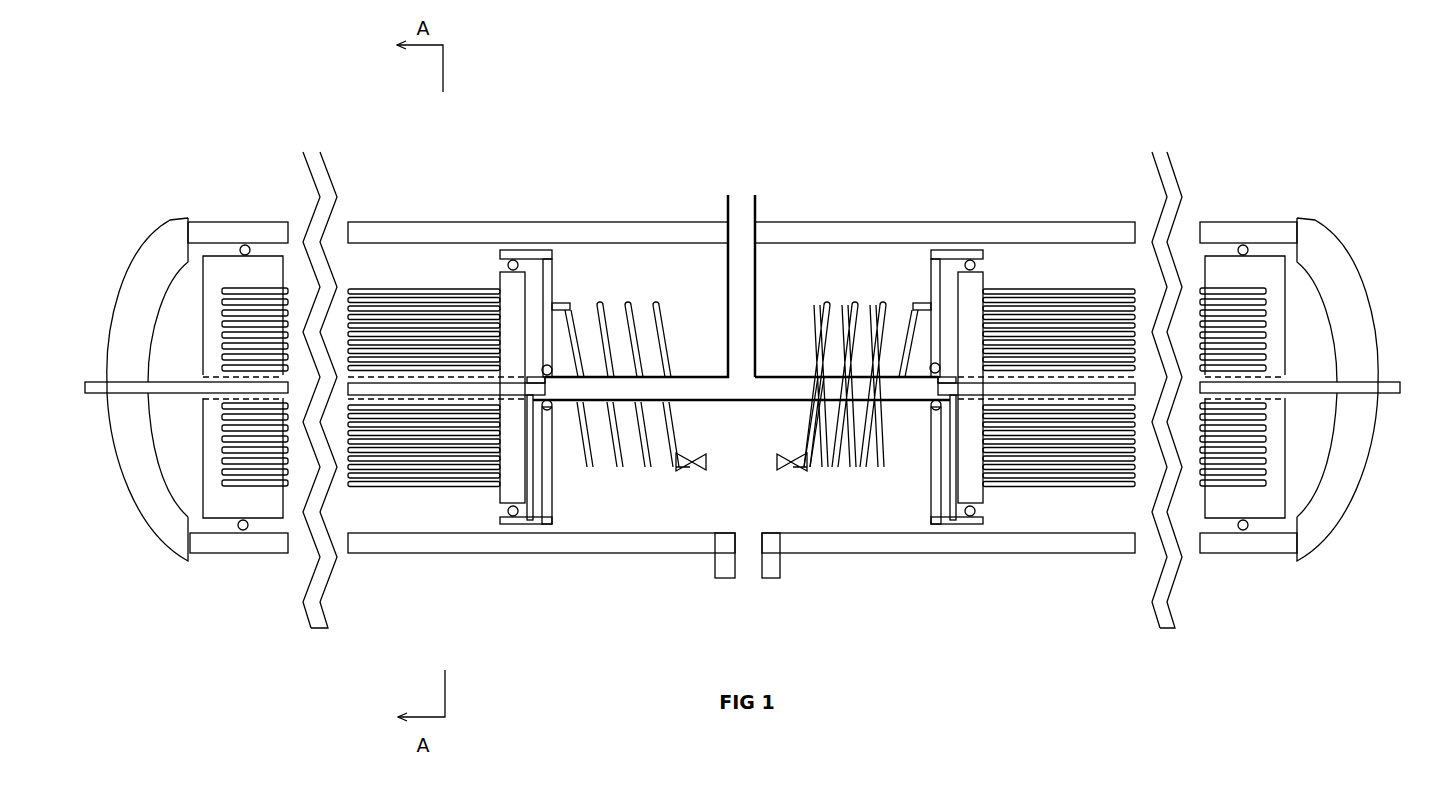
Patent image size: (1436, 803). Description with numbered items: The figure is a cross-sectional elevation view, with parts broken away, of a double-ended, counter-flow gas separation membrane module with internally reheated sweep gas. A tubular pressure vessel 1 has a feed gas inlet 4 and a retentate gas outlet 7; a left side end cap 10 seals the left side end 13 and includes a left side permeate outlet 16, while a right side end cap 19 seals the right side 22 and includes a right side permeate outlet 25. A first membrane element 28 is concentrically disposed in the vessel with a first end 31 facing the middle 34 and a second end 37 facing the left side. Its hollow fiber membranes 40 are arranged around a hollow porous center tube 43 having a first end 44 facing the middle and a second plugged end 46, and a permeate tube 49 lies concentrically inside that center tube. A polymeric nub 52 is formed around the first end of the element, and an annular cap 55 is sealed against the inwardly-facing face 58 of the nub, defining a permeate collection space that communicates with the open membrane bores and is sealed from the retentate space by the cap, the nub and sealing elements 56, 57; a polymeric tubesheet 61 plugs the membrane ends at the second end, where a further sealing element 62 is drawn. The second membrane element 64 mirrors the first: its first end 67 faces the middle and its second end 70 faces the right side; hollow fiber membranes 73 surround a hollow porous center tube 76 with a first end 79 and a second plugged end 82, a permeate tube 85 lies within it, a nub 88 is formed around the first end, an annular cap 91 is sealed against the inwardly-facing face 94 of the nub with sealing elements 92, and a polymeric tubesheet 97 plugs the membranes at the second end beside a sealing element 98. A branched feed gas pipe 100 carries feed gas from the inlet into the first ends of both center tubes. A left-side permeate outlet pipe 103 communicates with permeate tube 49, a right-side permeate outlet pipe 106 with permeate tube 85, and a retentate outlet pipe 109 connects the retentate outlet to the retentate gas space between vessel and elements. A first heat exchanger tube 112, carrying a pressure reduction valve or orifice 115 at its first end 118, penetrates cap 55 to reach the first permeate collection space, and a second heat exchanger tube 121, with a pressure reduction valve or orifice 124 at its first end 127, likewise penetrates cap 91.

The tubular pressure vessel 1 is at (205, 232).
The feed gas inlet 4 is at (748, 247).
The retentate gas outlet 7 is at (755, 566).
The left side end cap 10 is at (170, 221).
The left side end 13 is at (198, 577).
The left side permeate outlet 16 is at (132, 402).
The second end cap arm 19 is at (1338, 263).
The right side 22 is at (1290, 572).
The right side permeate outlet 25 is at (1369, 403).
The first membrane element 28 is at (423, 266).
The first end 31 is at (495, 513).
The middle 34 is at (801, 214).
The second end 37 is at (213, 522).
The hollow fiber membranes 40 is at (450, 313).
The hollow porous center tube 43 is at (362, 402).
The first end 44 is at (550, 366).
The second plugged end 46 is at (202, 402).
The permeate tube 49 is at (438, 387).
The polymeric nub 52 is at (510, 278).
The annular cap 55 is at (551, 507).
The sealing element 56 is at (535, 383).
The sealing element 57 is at (582, 372).
The inwardly-facing face 58 is at (529, 466).
The polymeric tubesheet 61 is at (260, 275).
The first bearing 62 is at (245, 245).
The second membrane element 64 is at (1062, 265).
The first end 67 is at (992, 513).
The second end 70 is at (1277, 524).
The hollow fiber membranes 73 is at (1098, 323).
The hollow porous center tube 76 is at (1112, 400).
The first end 79 is at (967, 392).
The second plugged end 82 is at (1283, 403).
The permeate tube 85 is at (1062, 390).
The nub 88 is at (975, 283).
The annular cap 91 is at (928, 505).
The second pivot joint 92 is at (932, 364).
The inwardly-facing face 94 is at (950, 470).
The polymeric tubesheet 97 is at (1255, 273).
The second bearing 98 is at (1242, 246).
The branched feed gas pipe 100 is at (760, 312).
The left-side permeate outlet pipe 103 is at (113, 385).
The right-side permeate outlet pipe 106 is at (1362, 395).
The retentate outlet pipe 109 is at (722, 562).
The first heat exchanger tube 112 is at (660, 312).
The pressure reduction valve or orifice 115 is at (694, 457).
The first end 118 is at (670, 478).
The second heat exchanger tube 121 is at (868, 312).
The pressure reduction valve or orifice 124 is at (792, 472).
The first end 127 is at (812, 478).